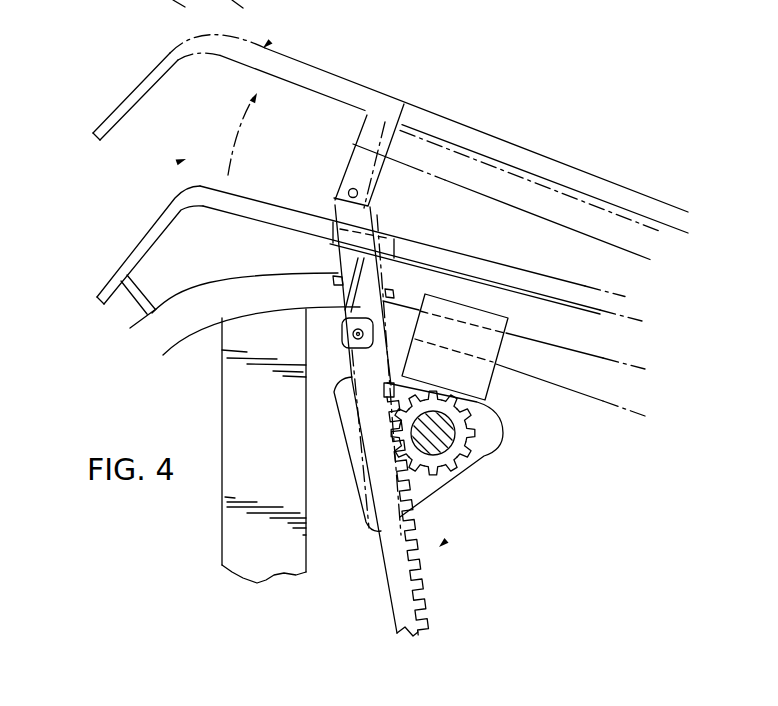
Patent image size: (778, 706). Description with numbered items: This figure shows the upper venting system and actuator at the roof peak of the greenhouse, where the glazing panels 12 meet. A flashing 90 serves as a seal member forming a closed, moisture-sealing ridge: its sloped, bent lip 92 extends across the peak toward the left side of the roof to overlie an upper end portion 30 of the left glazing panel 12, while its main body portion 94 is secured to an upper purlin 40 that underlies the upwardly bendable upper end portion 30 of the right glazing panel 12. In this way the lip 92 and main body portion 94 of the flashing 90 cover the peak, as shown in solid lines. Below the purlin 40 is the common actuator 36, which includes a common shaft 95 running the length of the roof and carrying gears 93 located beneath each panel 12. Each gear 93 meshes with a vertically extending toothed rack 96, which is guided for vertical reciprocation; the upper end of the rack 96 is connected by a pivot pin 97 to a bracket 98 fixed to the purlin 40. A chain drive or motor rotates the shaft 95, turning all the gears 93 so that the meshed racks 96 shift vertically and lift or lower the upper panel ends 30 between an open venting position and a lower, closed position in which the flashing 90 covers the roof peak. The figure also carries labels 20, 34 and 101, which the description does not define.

The glazing panel 12 is at (593, 175).
The lower support bar 20 is at (592, 340).
The upper end portion 30 is at (490, 145).
The direction of rail rotation 34 is at (183, 161).
The common actuator 36 is at (441, 545).
The upper purlin 40 is at (362, 257).
The flashing 90 is at (265, 46).
The lip 92 is at (116, 105).
The gear 93 is at (458, 430).
The main body portion 94 is at (323, 82).
The common shaft 95 is at (447, 447).
The toothed rack 96 is at (410, 584).
The pivot pin 97 is at (341, 336).
The bracket 98 is at (340, 309).
The mounting plate 101 is at (447, 486).